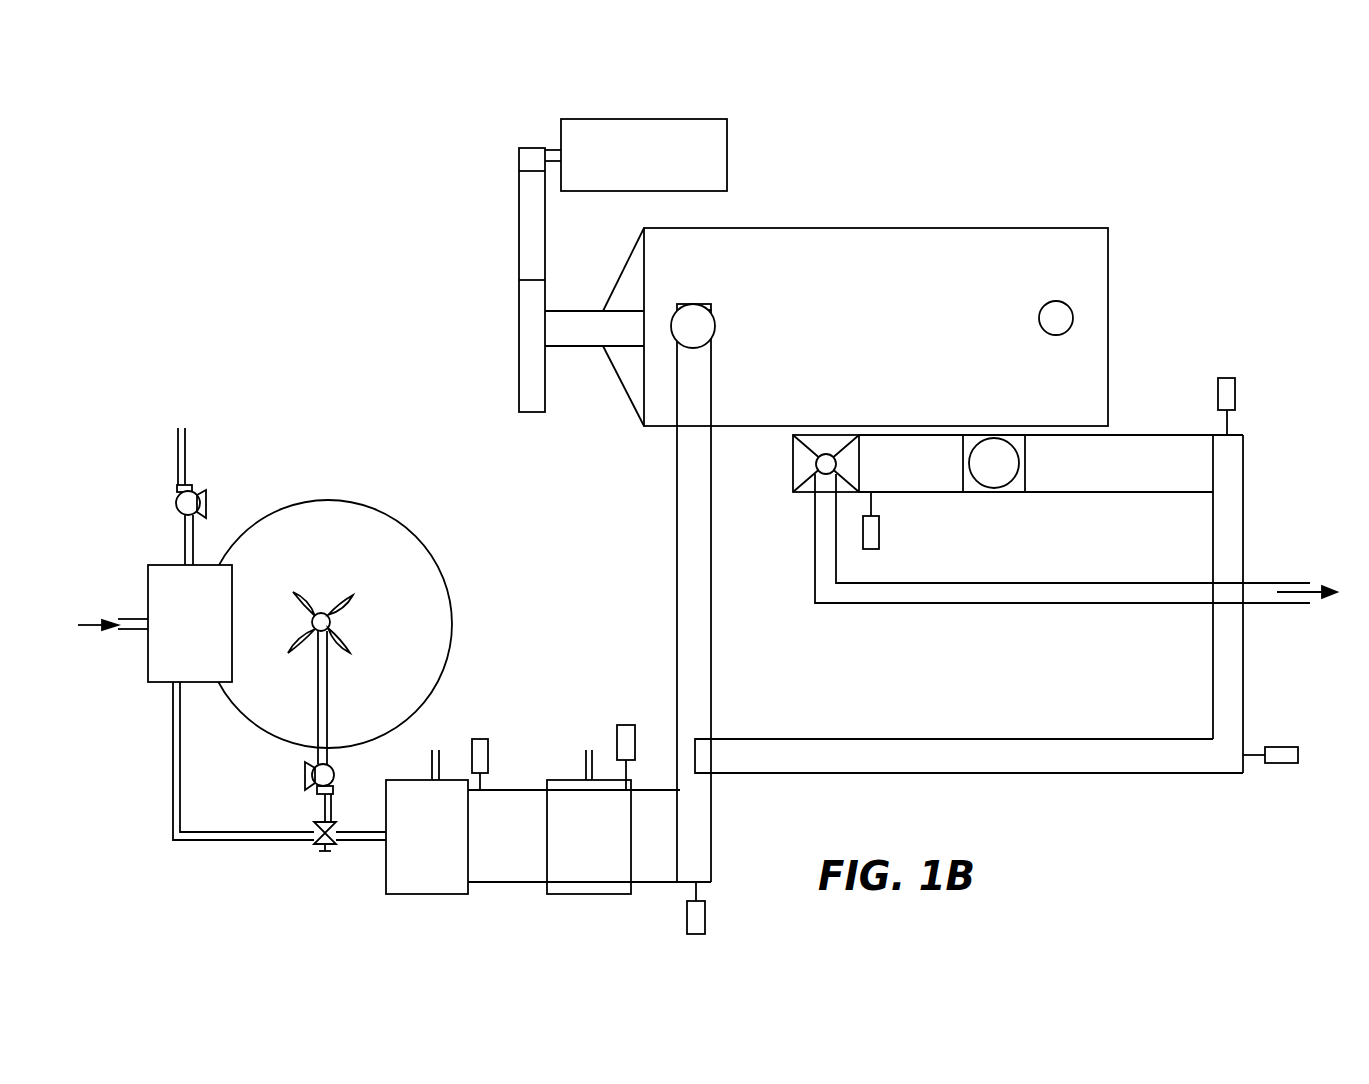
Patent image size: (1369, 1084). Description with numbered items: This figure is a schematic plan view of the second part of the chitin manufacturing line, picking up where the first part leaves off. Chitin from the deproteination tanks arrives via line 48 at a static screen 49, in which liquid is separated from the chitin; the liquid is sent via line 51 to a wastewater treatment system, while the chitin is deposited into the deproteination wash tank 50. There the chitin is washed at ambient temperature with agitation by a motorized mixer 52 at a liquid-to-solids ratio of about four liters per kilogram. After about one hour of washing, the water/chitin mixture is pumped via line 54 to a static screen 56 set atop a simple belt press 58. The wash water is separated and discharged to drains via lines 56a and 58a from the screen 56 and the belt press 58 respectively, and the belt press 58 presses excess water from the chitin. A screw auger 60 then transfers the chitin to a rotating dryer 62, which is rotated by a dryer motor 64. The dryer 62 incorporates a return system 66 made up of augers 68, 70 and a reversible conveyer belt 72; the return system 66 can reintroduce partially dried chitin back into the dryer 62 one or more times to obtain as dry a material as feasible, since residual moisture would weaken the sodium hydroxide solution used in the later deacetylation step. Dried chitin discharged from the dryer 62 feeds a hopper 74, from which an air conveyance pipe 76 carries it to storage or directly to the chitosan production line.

The line 48 is at (122, 632).
The static screen 49 is at (167, 565).
The deproteination wash tank 50 is at (447, 605).
The line 51 is at (187, 460).
The motorized mixer 52 is at (347, 650).
The line 54 is at (373, 833).
The static screen 56 is at (388, 858).
The line 56a is at (428, 757).
The belt press 58 is at (545, 786).
The line 58a is at (585, 765).
The screw auger 60 is at (710, 678).
The rotating dryer 62 is at (957, 227).
The dryer motor 64 is at (727, 170).
The return system 66 is at (1097, 803).
The auger 68 is at (1039, 739).
The auger 70 is at (1222, 707).
The reversible conveyer belt 72 is at (1158, 433).
The hopper 74 is at (800, 492).
The air conveyance pipe 76 is at (892, 600).